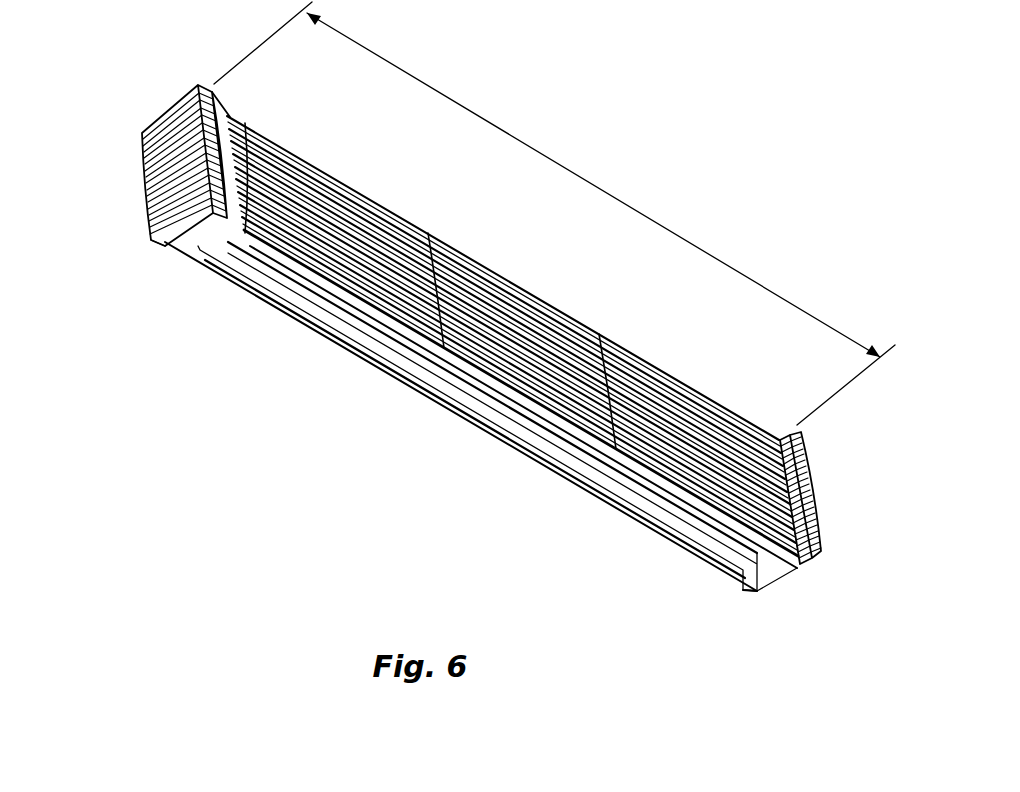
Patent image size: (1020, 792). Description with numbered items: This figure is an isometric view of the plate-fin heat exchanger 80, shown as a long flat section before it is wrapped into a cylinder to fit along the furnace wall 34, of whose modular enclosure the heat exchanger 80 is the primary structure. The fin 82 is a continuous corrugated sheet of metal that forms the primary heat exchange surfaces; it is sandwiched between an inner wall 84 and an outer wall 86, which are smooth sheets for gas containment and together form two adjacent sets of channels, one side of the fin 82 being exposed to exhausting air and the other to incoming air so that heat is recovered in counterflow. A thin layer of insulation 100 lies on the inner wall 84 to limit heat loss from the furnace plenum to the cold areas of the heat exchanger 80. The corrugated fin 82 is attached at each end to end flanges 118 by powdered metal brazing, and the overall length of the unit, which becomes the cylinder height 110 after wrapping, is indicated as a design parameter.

The furnace wall 34 is at (373, 362).
The heat exchanger 80 is at (424, 464).
The fin 82 is at (300, 290).
The inner wall 84 is at (250, 282).
The outer wall 86 is at (292, 147).
The thin layer of insulation 100 is at (521, 444).
The cylinder height 110 is at (610, 197).
The end flanges 118 is at (149, 216).